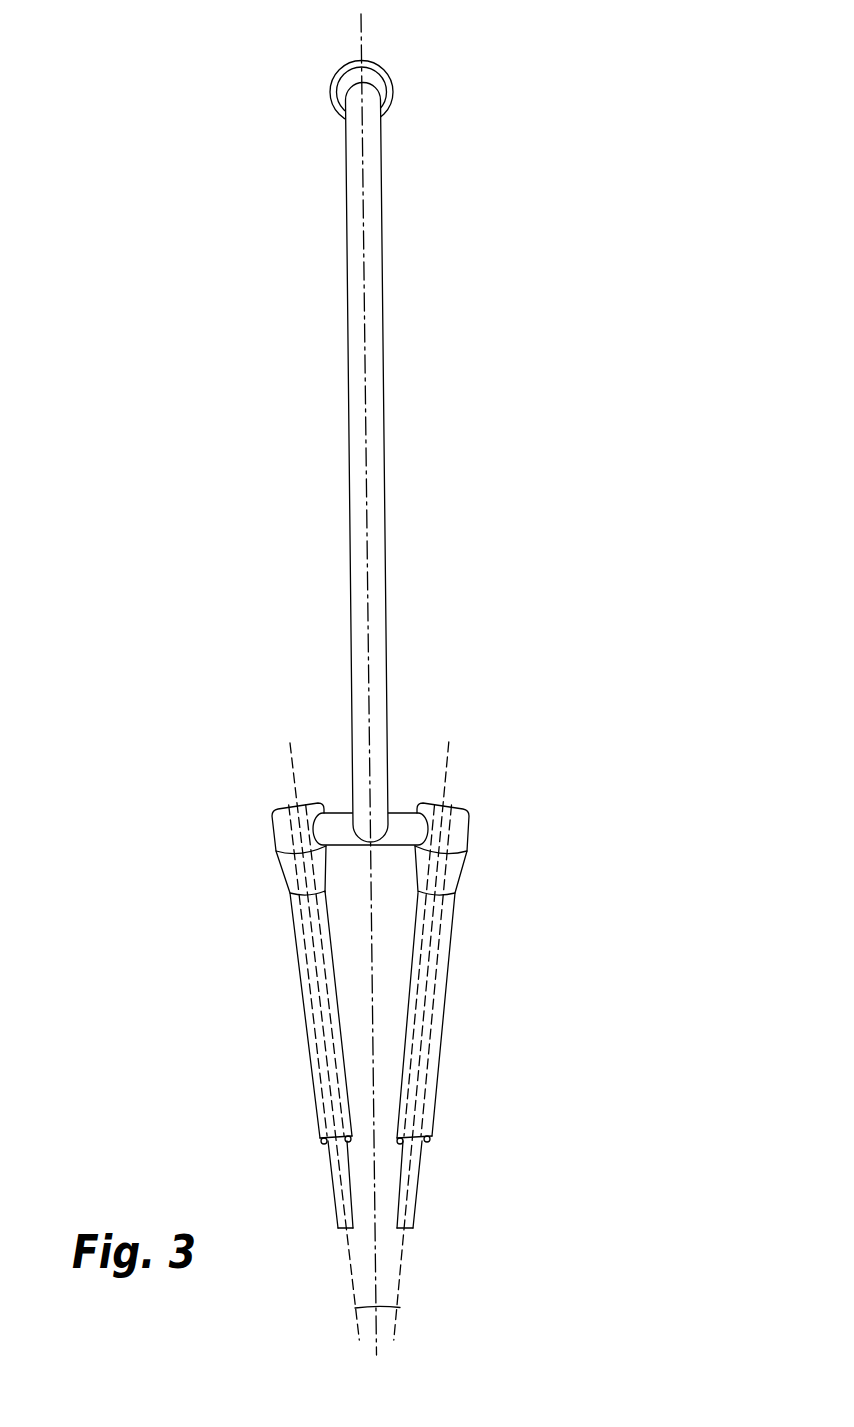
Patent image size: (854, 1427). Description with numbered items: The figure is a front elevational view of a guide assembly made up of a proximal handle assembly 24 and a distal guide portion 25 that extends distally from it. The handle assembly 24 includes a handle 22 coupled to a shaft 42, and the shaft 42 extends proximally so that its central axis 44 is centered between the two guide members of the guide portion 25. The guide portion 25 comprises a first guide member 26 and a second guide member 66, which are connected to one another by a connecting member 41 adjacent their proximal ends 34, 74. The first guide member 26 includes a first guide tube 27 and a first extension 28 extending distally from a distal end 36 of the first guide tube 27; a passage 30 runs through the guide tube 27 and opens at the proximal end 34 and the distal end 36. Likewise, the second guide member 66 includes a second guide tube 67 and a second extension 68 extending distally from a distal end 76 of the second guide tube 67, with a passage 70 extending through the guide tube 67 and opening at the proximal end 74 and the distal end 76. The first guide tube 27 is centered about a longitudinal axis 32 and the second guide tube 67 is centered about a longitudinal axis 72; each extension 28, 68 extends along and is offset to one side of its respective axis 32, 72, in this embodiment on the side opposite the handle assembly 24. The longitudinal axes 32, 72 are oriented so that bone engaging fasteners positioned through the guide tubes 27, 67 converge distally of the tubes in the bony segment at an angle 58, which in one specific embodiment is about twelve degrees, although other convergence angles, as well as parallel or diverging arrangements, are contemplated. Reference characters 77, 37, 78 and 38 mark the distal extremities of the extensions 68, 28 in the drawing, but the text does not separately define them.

The handle 22 is at (396, 61).
The proximal handle assembly 24 is at (398, 248).
The shaft 42 is at (365, 403).
The central axis of shaft 44 is at (368, 523).
The connecting member 41 is at (343, 815).
The longitudinal axis of second guide tube 72 is at (290, 757).
The longitudinal axis of first guide tube 32 is at (450, 763).
The proximal end of second guide member 74 is at (273, 833).
The proximal end of first guide member 34 is at (472, 837).
The second guide tube 67 is at (298, 972).
The first guide tube 27 is at (450, 942).
The second guide member 66 is at (290, 1018).
The first guide member 26 is at (452, 1037).
The distal guide portion 25 is at (582, 994).
The passage of second guide member 70 is at (313, 1045).
The passage of first guide member 30 is at (428, 1080).
The distal end of second guide tube 76 is at (322, 1145).
The distal end of first guide tube 36 is at (427, 1152).
The first shoulder 77 is at (327, 1146).
The second shoulder 37 is at (425, 1153).
The second extension 68 is at (343, 1214).
The first extension 28 is at (414, 1210).
The first tip end 78 is at (345, 1229).
The second tip end 38 is at (405, 1229).
The angle 58 is at (368, 1320).